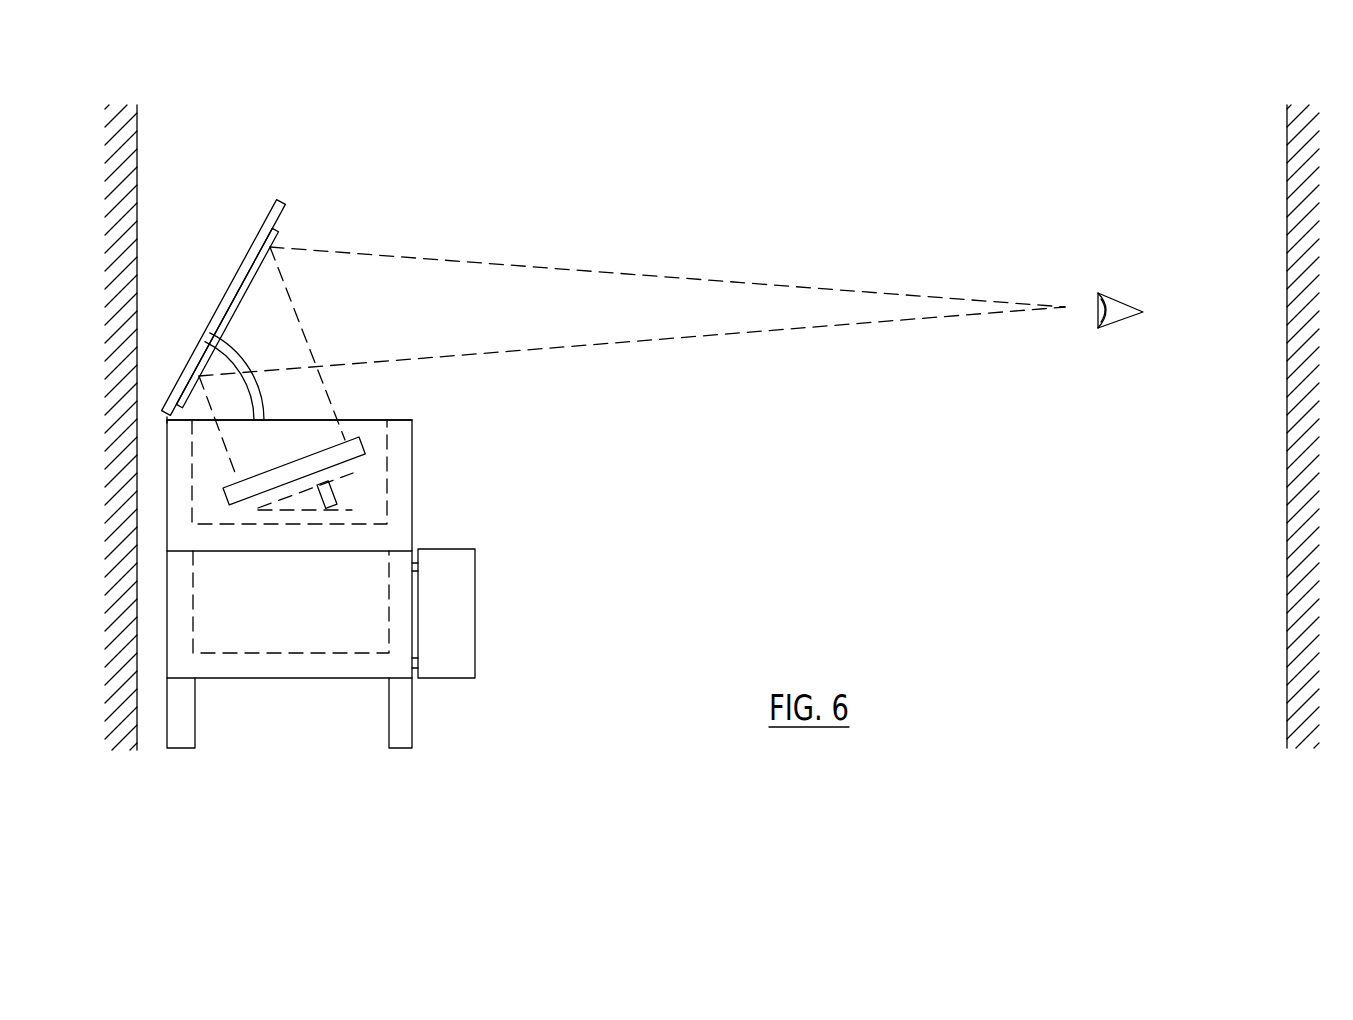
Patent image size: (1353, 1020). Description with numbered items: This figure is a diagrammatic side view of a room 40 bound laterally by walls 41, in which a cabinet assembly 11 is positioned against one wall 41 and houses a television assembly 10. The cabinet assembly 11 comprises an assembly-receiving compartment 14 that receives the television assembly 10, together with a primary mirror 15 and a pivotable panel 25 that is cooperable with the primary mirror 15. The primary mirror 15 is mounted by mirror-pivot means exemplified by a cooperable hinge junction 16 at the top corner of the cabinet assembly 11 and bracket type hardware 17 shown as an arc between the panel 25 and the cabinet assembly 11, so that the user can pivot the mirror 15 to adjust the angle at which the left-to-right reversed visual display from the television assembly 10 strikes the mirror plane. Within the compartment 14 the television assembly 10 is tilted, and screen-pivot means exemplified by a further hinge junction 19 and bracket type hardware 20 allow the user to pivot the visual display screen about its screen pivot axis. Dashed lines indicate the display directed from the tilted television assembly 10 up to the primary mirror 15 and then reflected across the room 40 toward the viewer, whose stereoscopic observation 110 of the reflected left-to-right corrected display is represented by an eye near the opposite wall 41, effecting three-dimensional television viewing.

The walls 41 is at (137, 142).
The pivotable panel 25 is at (245, 262).
The primary mirror 15 is at (275, 238).
The bracket type hardware 17 is at (243, 357).
The assembly-receiving compartment 14 is at (373, 422).
The television assembly 10 is at (370, 453).
The cabinet assembly 11 is at (412, 485).
The hinge junction 16 is at (167, 420).
The hinge junction 19 is at (245, 509).
The bracket type hardware 20 is at (340, 493).
The room 40 is at (962, 204).
The stereoscopic observation 110 is at (1143, 312).